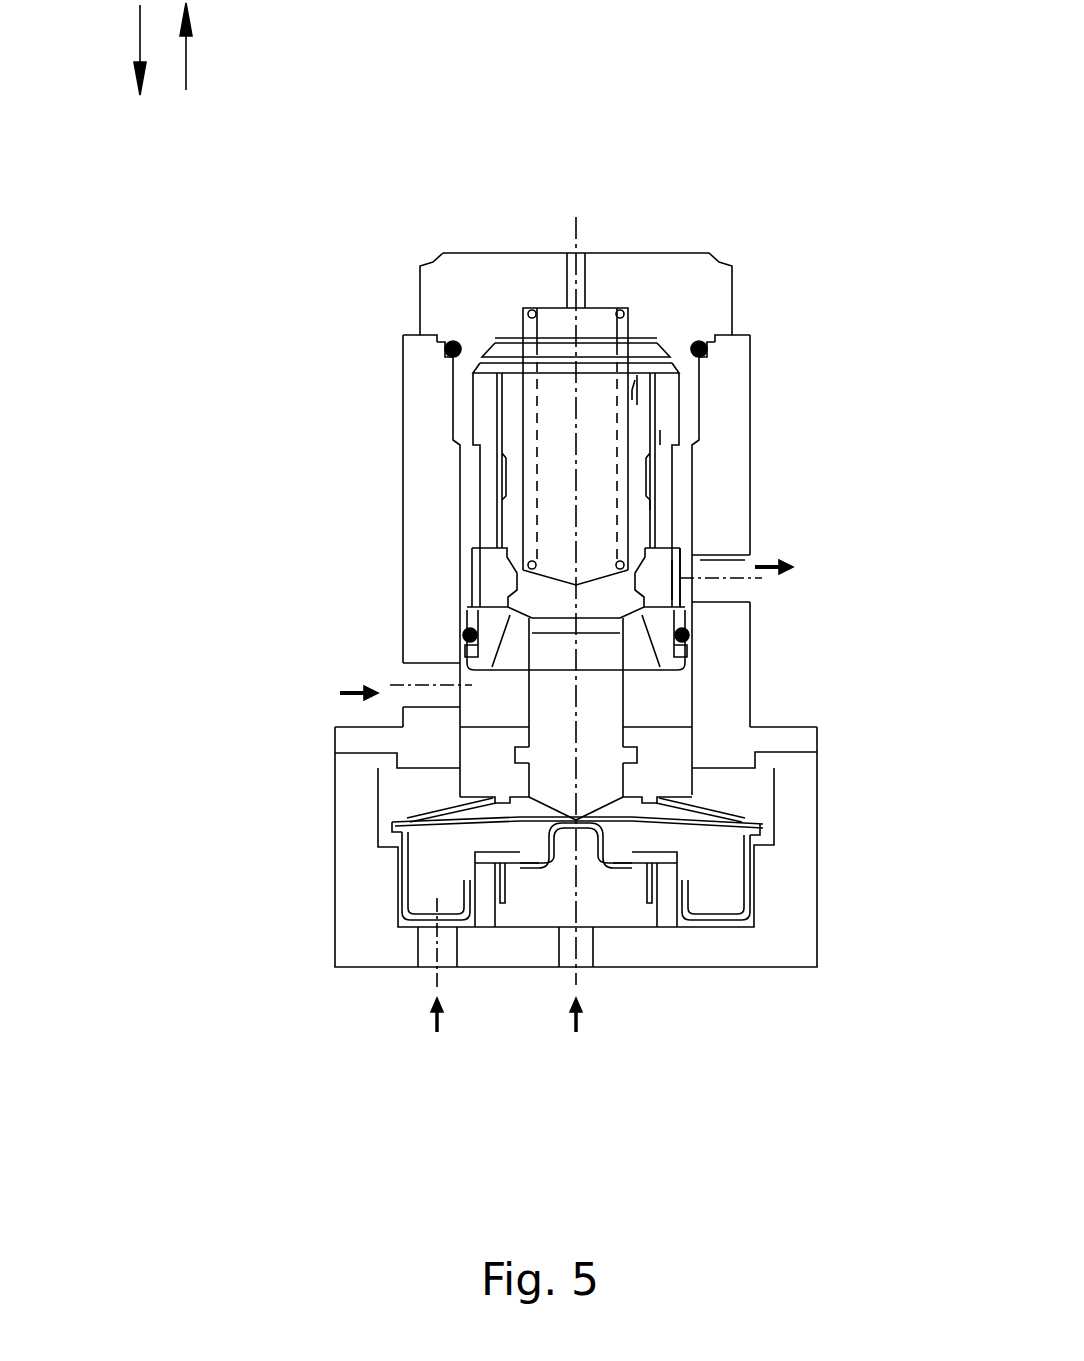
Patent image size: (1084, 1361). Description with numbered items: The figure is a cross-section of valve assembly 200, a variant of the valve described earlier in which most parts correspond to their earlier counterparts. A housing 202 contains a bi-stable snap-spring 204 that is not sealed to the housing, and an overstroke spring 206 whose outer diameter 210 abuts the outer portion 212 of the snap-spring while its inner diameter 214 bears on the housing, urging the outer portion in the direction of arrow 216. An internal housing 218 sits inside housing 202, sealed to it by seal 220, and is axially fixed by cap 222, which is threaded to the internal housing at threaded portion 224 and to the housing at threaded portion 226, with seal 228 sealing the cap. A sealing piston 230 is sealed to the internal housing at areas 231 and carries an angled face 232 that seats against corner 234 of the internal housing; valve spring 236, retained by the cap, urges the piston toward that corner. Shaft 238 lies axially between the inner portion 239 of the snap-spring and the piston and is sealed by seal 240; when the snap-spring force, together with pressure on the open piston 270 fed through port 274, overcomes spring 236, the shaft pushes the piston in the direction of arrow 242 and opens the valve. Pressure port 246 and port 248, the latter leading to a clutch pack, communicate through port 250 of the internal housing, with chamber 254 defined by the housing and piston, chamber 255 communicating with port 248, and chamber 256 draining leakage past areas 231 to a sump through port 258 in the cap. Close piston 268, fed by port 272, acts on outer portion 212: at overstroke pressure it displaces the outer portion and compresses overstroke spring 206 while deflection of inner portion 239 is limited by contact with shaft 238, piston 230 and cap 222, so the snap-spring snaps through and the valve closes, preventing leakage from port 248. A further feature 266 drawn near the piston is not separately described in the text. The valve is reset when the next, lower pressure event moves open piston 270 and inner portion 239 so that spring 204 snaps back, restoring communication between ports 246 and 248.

The valve assembly 200 is at (205, 356).
The housing 202 is at (353, 848).
The snap-spring 204 is at (430, 823).
The overstroke spring 206 is at (458, 805).
The outer diameter of overstroke spring 210 is at (405, 817).
The outer portion of snap-spring 212 is at (386, 838).
The inner diameter of overstroke spring 214 is at (493, 797).
The direction arrow 216 is at (140, 40).
The internal housing 218 is at (490, 497).
The seal 220 is at (465, 637).
The cap 222 is at (502, 273).
The threaded portion 224 is at (472, 418).
The threaded portion 226 is at (443, 377).
The seal 228 is at (457, 342).
The sealing piston 230 is at (638, 407).
The sealed areas 231 is at (657, 504).
The angled face 232 is at (513, 567).
The corner 234 is at (500, 614).
The valve spring 236 is at (619, 316).
The shaft 238 is at (572, 745).
The inner portion of snap-spring 239 is at (571, 822).
The seal 240 is at (627, 757).
The direction arrow 242 is at (185, 43).
The pressure port 246 is at (422, 670).
The port 248 is at (731, 560).
The port of internal housing 250 is at (658, 587).
The pressure chamber 254 is at (517, 712).
The chamber 255 is at (650, 607).
The chamber 256 is at (612, 494).
The port in cap 258 is at (572, 270).
The spool flange 266 is at (658, 506).
The close piston 268 is at (407, 890).
The open piston 270 is at (652, 883).
The port 272 is at (446, 952).
The port 274 is at (584, 952).